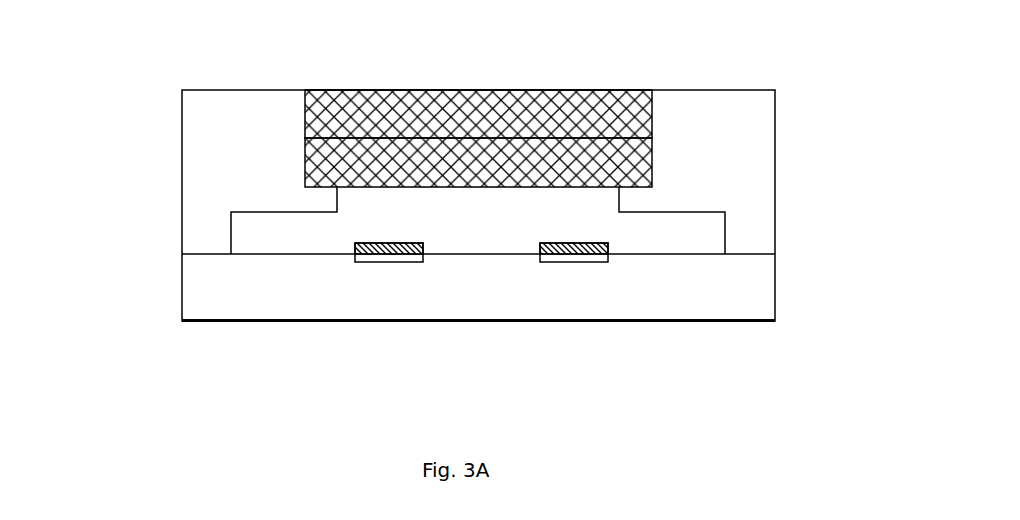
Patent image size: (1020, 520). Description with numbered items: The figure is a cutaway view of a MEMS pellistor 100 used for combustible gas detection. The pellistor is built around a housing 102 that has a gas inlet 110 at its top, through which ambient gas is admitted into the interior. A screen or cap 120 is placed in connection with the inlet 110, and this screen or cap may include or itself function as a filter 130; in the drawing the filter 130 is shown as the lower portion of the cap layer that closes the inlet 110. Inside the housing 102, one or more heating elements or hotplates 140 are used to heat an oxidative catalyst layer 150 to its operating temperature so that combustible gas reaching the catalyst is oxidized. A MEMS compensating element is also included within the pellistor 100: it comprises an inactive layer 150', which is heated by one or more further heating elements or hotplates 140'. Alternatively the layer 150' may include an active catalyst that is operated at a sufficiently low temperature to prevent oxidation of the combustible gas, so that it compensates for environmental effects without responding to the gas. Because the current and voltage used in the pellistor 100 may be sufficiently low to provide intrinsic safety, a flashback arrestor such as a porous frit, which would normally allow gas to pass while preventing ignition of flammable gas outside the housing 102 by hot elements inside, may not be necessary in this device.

The MEMS pellistor 100 is at (171, 72).
The housing 102 is at (780, 183).
The gas inlet 110 is at (652, 90).
The screen or cap 120 is at (460, 90).
The filter 130 is at (590, 153).
The heating element or hotplate 140 is at (241, 273).
The heating element or hotplate 140' is at (711, 291).
The oxidative catalyst layer 150 is at (206, 178).
The inactive layer 150' is at (744, 220).